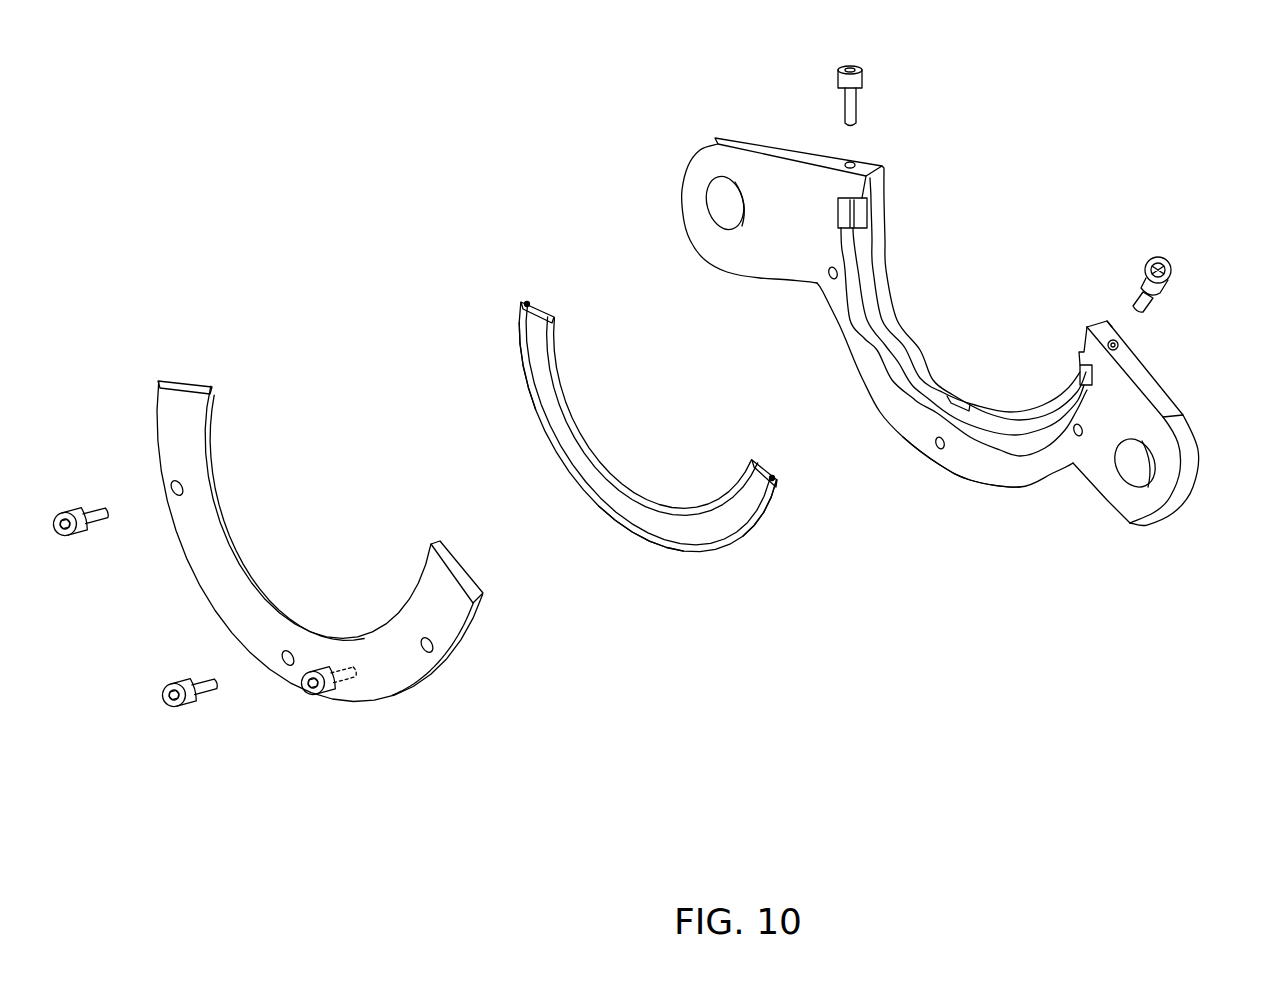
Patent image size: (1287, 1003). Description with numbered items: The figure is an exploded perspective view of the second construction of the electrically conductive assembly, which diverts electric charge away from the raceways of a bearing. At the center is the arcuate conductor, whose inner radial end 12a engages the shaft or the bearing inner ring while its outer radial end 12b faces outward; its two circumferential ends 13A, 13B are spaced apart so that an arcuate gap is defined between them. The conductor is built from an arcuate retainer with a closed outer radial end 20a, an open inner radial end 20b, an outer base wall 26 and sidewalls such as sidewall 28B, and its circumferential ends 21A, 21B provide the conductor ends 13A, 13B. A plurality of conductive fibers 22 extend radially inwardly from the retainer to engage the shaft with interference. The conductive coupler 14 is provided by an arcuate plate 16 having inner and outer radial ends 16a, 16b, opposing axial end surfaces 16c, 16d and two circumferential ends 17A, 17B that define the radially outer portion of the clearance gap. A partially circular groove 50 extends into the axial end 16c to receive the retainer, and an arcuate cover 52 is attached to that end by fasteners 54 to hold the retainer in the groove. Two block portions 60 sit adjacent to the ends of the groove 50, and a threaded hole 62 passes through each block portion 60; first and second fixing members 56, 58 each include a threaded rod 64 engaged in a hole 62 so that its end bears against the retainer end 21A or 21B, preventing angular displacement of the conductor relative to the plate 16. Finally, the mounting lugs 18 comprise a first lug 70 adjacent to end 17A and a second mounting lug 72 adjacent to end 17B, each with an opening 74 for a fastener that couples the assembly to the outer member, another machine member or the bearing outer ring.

The inner radial end 12a is at (570, 385).
The outer radial end 12b is at (540, 435).
The circumferential end 13A is at (550, 303).
The circumferential end 13B is at (763, 460).
The conductive coupler 14 is at (946, 314).
The arcuate plate 16 is at (927, 357).
The inner radial end 16a is at (937, 375).
The outer radial end 16b is at (972, 480).
The axial end surface 16c is at (877, 385).
The axial end surface 16d is at (908, 328).
The circumferential end 17A is at (870, 163).
The circumferential end 17B is at (1113, 333).
The mounting lug 18 is at (695, 150).
The closed outer radial end 20a is at (645, 547).
The open inner radial end 20b is at (598, 493).
The circumferential end 21A is at (527, 300).
The circumferential end 21B is at (773, 473).
The conductive fibers 22 is at (543, 353).
The outer base wall 26 is at (758, 517).
The sidewall 28B is at (527, 376).
The partially circular groove 50 is at (870, 302).
The arcuate cover 52 is at (222, 585).
The fasteners 54 is at (92, 512).
The first fixing member 56 is at (850, 62).
The second fixing member 58 is at (1165, 262).
The block portion 60 is at (877, 187).
The threaded hole 62 is at (848, 160).
The threaded rod 64 is at (855, 100).
The first lug 70 is at (757, 142).
The second mounting lug 72 is at (1160, 403).
The opening 74 is at (715, 202).